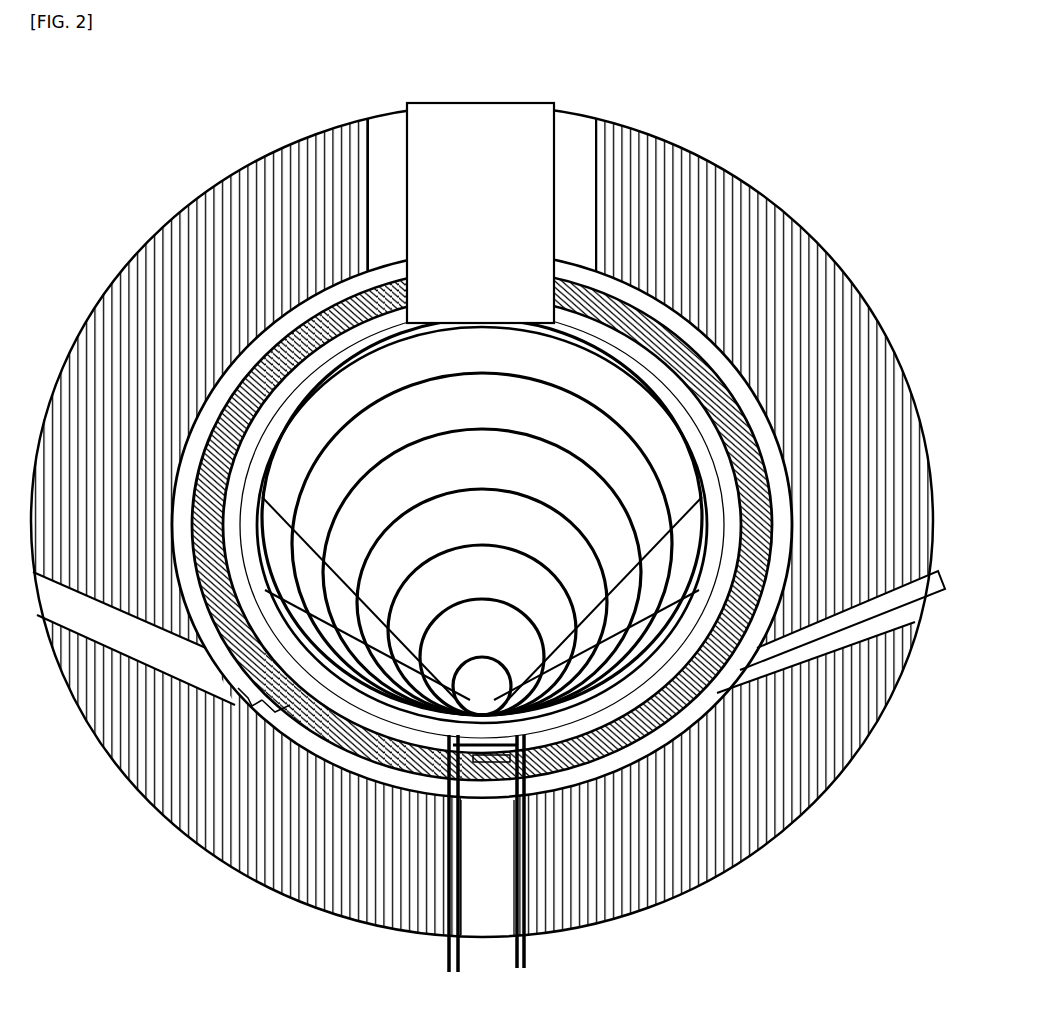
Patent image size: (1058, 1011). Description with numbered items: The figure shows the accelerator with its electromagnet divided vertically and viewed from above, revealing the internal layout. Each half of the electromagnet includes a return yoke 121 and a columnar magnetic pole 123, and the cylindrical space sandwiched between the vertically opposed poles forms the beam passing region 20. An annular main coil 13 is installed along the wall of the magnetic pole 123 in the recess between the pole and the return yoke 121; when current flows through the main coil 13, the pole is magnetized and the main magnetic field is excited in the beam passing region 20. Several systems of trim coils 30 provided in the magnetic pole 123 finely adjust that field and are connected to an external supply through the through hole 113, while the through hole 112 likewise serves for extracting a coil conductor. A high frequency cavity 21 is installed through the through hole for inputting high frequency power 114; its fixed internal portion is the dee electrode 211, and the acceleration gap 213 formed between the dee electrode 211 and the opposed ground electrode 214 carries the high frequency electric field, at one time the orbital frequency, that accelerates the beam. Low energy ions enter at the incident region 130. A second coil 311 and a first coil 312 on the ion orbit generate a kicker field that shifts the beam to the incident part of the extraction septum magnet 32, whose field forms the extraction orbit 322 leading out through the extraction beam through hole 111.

The main coil 13 is at (474, 478).
The beam passing region 20 is at (512, 474).
The high frequency cavity 21 is at (480, 179).
The trim coils 30 is at (595, 510).
The extraction septum magnet 32 is at (567, 860).
The extraction beam through hole 111 is at (842, 662).
The through hole 112 is at (446, 891).
The through hole 113 is at (134, 693).
The through hole for inputting high frequency power 114 is at (486, 165).
The return yoke 121 is at (480, 515).
The magnetic pole 123 is at (579, 471).
The incident region 130 is at (483, 860).
The dee electrode 211 is at (471, 429).
The acceleration gap 213 is at (243, 805).
The ground electrode 214 is at (202, 784).
The second coil 311 is at (414, 863).
The first coil 312 is at (623, 844).
The extraction orbit 322 is at (816, 737).